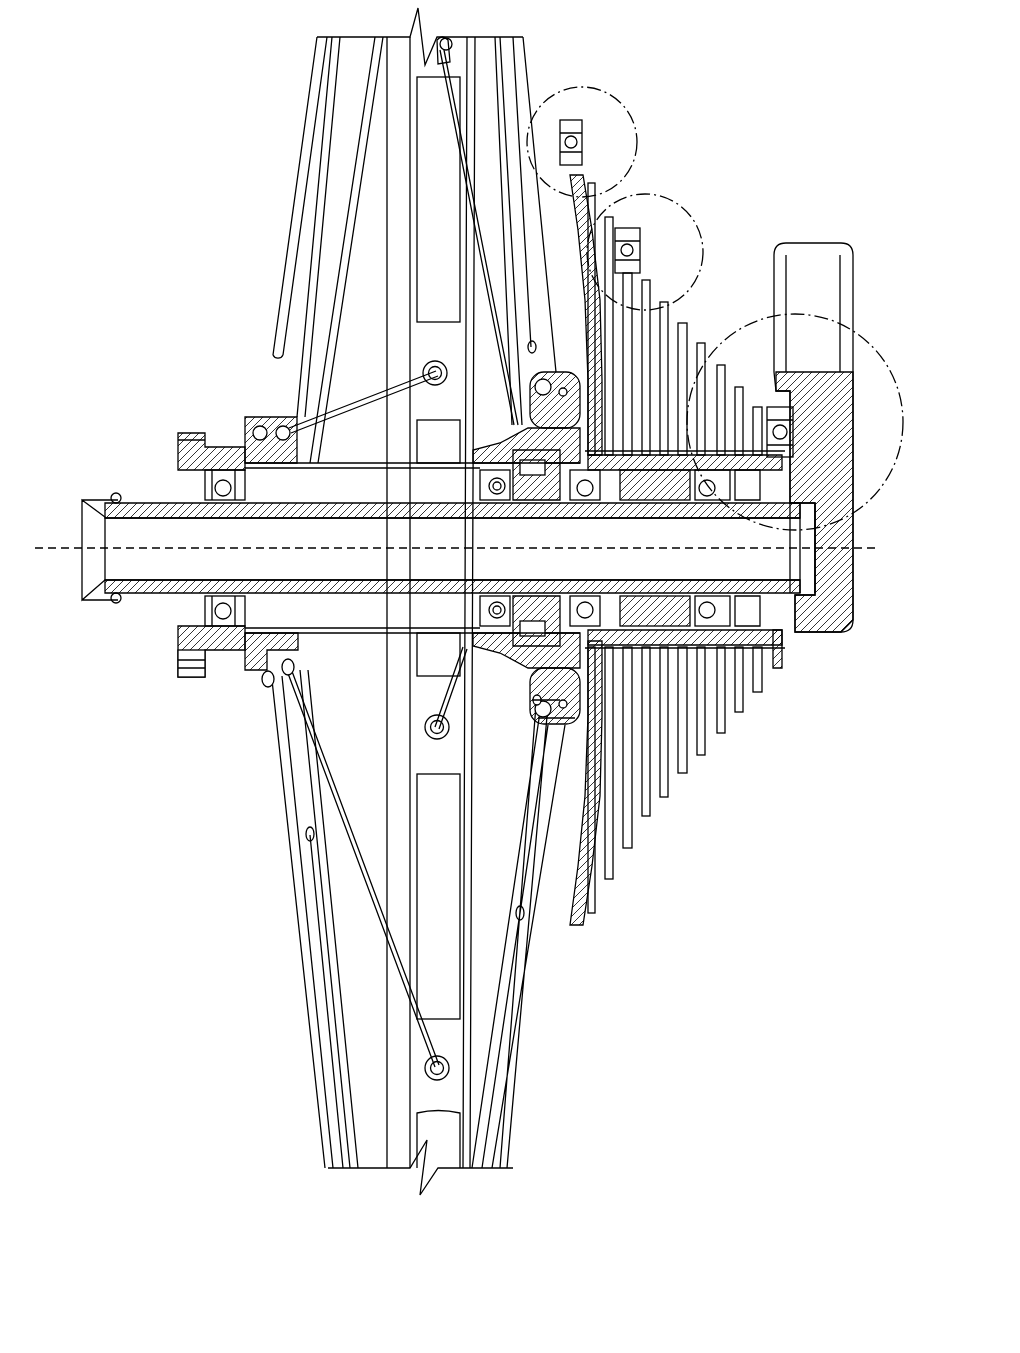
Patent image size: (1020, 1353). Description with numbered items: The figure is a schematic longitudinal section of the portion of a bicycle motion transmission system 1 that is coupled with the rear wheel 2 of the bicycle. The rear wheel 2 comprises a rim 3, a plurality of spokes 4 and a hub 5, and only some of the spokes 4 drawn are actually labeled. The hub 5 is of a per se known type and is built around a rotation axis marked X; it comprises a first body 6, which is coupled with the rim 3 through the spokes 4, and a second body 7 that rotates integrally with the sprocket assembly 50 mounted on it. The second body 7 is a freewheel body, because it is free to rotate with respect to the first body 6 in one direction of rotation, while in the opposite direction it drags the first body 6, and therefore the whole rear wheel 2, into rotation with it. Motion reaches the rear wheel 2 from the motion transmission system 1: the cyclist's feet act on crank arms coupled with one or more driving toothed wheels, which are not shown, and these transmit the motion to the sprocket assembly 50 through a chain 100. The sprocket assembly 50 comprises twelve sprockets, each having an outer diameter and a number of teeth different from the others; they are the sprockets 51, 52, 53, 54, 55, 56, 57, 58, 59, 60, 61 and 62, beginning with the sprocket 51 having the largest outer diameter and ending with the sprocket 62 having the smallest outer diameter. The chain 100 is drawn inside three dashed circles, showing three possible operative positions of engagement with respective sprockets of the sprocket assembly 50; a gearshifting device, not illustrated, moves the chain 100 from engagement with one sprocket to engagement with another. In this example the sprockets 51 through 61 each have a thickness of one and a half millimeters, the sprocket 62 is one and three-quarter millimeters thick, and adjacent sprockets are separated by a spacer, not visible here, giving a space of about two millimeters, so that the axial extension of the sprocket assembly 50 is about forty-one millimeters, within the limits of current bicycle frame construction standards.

The motion transmission system portion 1 is at (200, 112).
The rear wheel 2 is at (362, 722).
The rim 3 is at (385, 345).
The spokes 4 is at (350, 218).
The hub 5 is at (157, 615).
The first body 6 is at (148, 503).
The second body 7 is at (553, 727).
The sprocket assembly 50 is at (672, 170).
The sprocket 51 is at (578, 880).
The sprocket 52 is at (600, 910).
The sprocket 53 is at (612, 878).
The sprocket 54 is at (630, 846).
The sprocket 55 is at (648, 815).
The sprocket 56 is at (668, 797).
The sprocket 57 is at (686, 773).
The sprocket 58 is at (705, 755).
The sprocket 59 is at (724, 733).
The sprocket 60 is at (742, 712).
The sprocket 61 is at (762, 692).
The sprocket 62 is at (782, 665).
The chain 100 is at (578, 118).